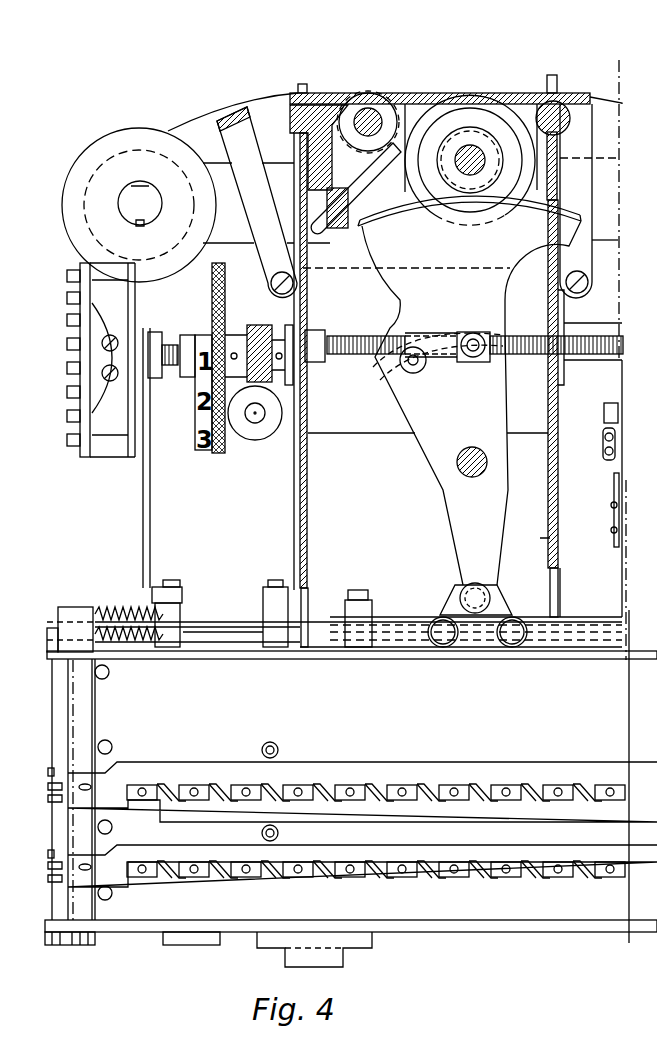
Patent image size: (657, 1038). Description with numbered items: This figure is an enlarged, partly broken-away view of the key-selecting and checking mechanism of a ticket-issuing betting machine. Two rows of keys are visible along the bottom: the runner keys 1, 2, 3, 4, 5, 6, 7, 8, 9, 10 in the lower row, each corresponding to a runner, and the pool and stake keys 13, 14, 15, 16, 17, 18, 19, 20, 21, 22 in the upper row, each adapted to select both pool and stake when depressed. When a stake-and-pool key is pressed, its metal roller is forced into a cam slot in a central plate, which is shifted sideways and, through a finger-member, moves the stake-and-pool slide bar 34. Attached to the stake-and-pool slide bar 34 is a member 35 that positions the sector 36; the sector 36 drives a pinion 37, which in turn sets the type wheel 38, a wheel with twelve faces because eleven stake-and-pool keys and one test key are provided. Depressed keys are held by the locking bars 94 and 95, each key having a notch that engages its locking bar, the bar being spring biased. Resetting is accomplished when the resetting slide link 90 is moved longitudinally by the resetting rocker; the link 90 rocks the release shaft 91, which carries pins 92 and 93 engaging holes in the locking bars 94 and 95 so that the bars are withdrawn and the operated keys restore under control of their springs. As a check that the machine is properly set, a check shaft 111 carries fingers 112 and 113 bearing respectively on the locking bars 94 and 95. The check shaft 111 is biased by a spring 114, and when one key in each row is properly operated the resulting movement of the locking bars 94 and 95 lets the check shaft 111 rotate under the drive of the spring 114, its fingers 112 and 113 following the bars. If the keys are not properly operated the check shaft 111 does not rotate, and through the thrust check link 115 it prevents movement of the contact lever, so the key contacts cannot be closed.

The key 1 is at (146, 882).
The key 2 is at (198, 882).
The key 3 is at (250, 882).
The key 4 is at (302, 882).
The key 5 is at (354, 882).
The key 6 is at (406, 882).
The key 7 is at (458, 882).
The key 8 is at (510, 882).
The key 9 is at (562, 882).
The key 10 is at (614, 882).
The pool and stake key 13 is at (152, 779).
The pool and stake key 14 is at (204, 779).
The pool and stake key 15 is at (256, 779).
The pool and stake key 16 is at (308, 779).
The pool and stake key 17 is at (360, 779).
The pool and stake key 18 is at (412, 779).
The pool and stake key 19 is at (464, 779).
The pool and stake key 20 is at (516, 779).
The pool and stake key 21 is at (568, 779).
The pool and stake key 22 is at (620, 779).
The stake-and-pool slide bar 34 is at (407, 644).
The member 35 is at (502, 610).
The sector 36 is at (495, 253).
The pinion 37 is at (510, 143).
The type wheel 38 is at (467, 110).
The resetting slide link 90 is at (233, 620).
The release shaft 91 is at (85, 721).
The pin 92 is at (68, 784).
The pin 93 is at (68, 866).
The locking bar 94 is at (123, 768).
The locking bar 95 is at (135, 850).
The check shaft 111 is at (58, 721).
The finger 112 is at (52, 791).
The finger 113 is at (52, 871).
The spring 114 is at (132, 610).
The thrust check link 115 is at (212, 643).